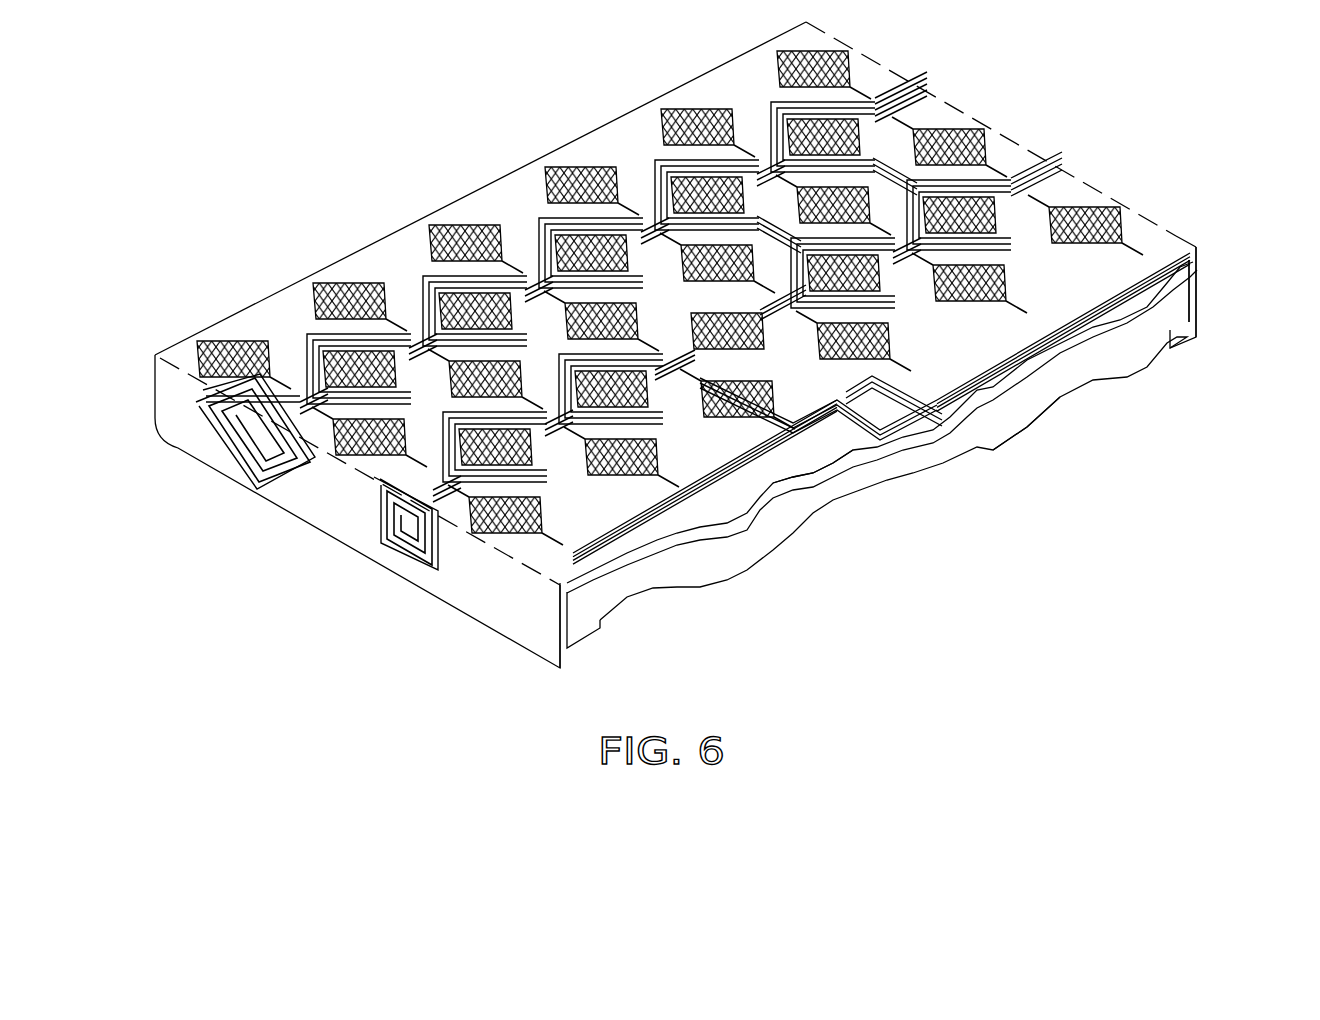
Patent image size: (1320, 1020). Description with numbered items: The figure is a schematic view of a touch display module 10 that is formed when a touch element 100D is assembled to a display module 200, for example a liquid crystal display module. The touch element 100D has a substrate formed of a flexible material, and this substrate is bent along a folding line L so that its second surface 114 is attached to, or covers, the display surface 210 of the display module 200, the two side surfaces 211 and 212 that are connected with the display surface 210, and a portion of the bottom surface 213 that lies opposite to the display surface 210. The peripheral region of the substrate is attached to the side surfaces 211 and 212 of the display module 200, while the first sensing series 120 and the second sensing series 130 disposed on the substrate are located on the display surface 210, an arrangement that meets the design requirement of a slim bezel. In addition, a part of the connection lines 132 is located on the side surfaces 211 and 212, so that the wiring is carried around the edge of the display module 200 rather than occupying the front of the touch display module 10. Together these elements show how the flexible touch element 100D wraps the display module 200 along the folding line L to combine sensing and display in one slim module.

The touch element 100D is at (415, 166).
The second sensing series 130 is at (711, 98).
The first sensing series 120 is at (548, 252).
The connection lines 132 is at (272, 487).
The display module 200 is at (1125, 358).
The display surface 210 is at (1127, 316).
The side surface 211 is at (563, 619).
The side surface 212 is at (1199, 285).
The bottom surface 213 is at (1020, 400).
The second surface 114 is at (808, 478).
The touch display module 10 is at (1131, 453).
The folding line L is at (838, 25).